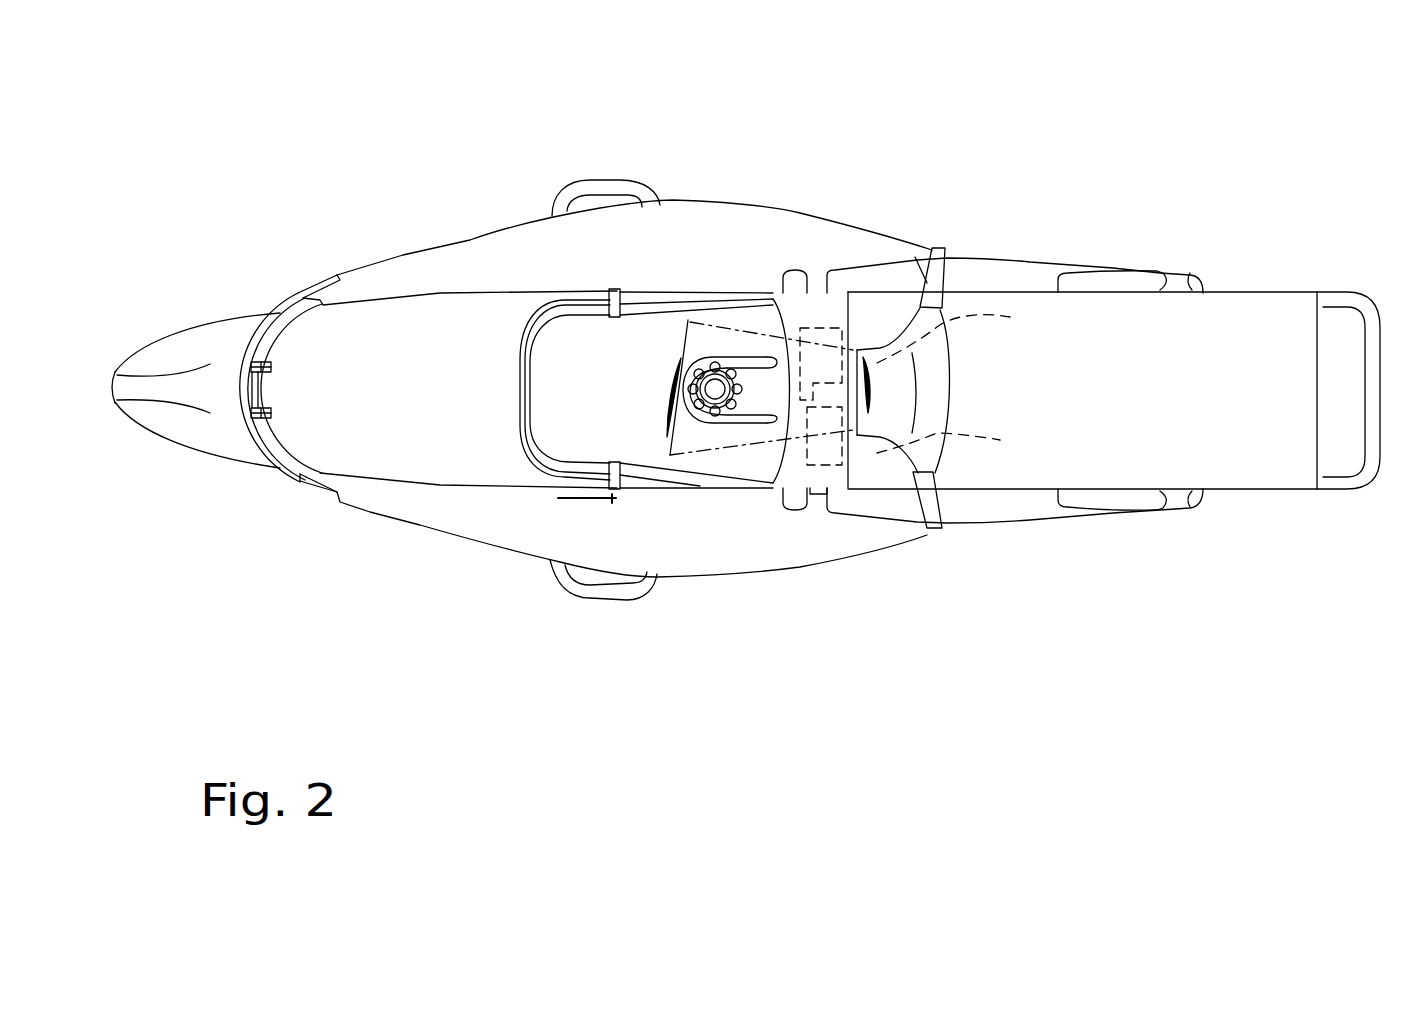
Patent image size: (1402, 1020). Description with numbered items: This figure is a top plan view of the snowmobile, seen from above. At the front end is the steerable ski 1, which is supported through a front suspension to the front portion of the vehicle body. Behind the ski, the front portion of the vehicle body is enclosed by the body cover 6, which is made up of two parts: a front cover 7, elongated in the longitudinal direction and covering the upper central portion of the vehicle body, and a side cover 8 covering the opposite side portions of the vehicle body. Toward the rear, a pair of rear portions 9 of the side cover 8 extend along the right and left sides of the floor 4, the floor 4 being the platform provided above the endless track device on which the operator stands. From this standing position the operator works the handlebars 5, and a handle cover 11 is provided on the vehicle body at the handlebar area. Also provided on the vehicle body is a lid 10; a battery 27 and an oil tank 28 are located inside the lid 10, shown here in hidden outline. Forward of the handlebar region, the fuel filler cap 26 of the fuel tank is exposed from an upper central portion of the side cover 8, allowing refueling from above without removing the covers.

The steerable ski 1 is at (228, 320).
The floor 4 is at (1163, 411).
The handlebars 5 is at (940, 272).
The body cover 6 is at (483, 215).
The front cover 7 is at (387, 305).
The side cover 8 is at (468, 248).
The rear portions 9 is at (995, 262).
The lid 10 is at (823, 303).
The handle cover 11 is at (897, 390).
The fuel filler cap 26 is at (725, 370).
The battery 27 is at (956, 448).
The oil tank 28 is at (962, 336).